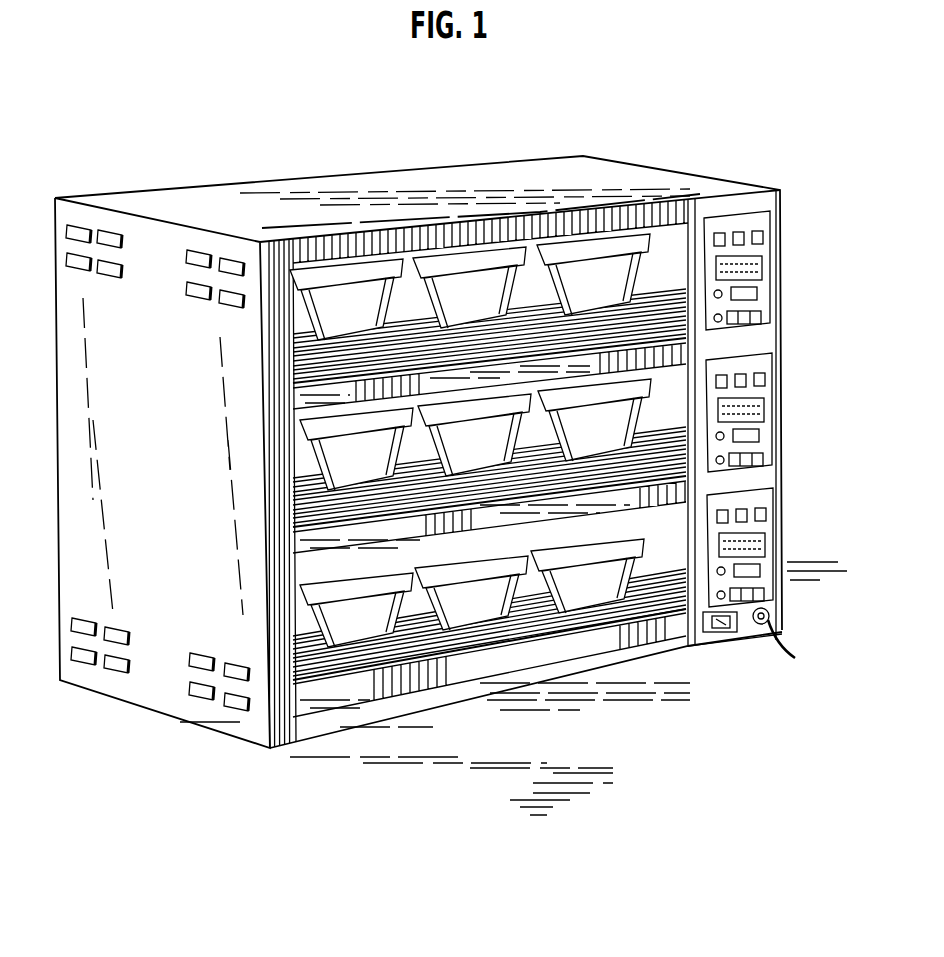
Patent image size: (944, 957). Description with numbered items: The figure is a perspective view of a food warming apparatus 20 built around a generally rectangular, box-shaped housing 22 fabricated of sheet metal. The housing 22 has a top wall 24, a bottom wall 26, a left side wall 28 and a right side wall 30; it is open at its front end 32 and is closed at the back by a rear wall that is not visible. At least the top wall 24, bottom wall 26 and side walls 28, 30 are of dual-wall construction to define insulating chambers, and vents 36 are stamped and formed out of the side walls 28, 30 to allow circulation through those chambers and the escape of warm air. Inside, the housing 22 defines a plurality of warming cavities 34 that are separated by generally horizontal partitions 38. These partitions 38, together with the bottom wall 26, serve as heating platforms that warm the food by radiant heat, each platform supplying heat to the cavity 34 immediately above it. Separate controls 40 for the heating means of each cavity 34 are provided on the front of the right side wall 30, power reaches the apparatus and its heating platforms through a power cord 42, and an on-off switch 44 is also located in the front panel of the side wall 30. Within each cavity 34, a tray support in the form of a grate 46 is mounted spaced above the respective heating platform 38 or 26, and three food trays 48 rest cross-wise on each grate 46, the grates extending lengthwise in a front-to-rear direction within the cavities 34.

The food warming apparatus 20 is at (580, 130).
The housing 22 is at (618, 160).
The top wall 24 is at (418, 183).
The bottom wall 26 is at (370, 717).
The left side wall 28 is at (161, 408).
The right side wall 30 is at (782, 330).
The open front end 32 is at (572, 643).
The warming cavities 34 is at (663, 263).
The vents 36 is at (205, 246).
The horizontal partitions 38 is at (672, 355).
The controls 40 is at (753, 280).
The power cord 42 is at (790, 646).
The on-off switch 44 is at (730, 634).
The grate 46 is at (320, 386).
The food trays 48 is at (350, 306).